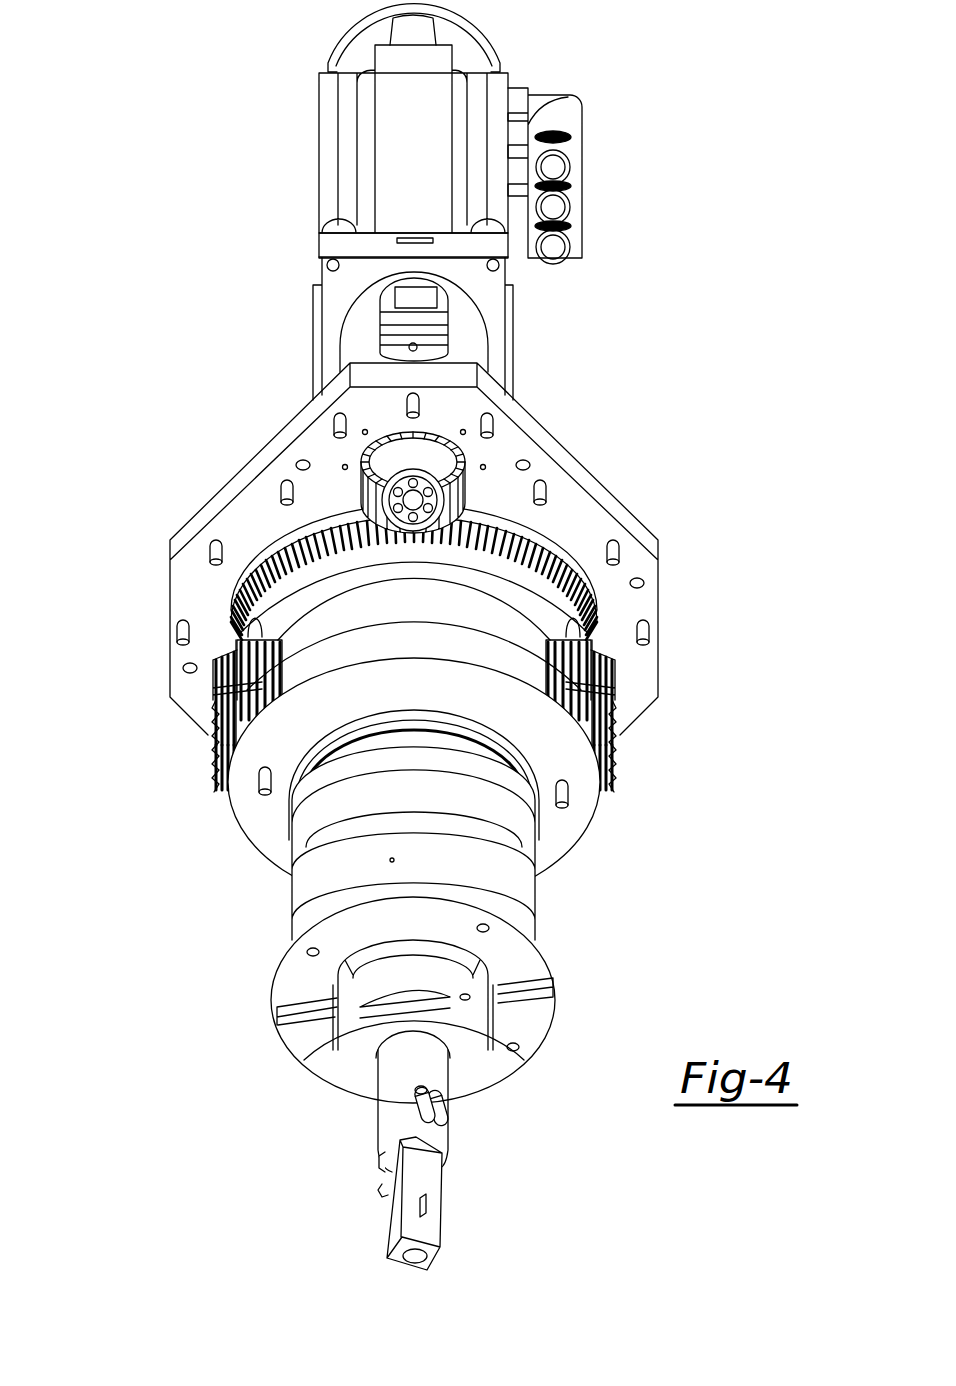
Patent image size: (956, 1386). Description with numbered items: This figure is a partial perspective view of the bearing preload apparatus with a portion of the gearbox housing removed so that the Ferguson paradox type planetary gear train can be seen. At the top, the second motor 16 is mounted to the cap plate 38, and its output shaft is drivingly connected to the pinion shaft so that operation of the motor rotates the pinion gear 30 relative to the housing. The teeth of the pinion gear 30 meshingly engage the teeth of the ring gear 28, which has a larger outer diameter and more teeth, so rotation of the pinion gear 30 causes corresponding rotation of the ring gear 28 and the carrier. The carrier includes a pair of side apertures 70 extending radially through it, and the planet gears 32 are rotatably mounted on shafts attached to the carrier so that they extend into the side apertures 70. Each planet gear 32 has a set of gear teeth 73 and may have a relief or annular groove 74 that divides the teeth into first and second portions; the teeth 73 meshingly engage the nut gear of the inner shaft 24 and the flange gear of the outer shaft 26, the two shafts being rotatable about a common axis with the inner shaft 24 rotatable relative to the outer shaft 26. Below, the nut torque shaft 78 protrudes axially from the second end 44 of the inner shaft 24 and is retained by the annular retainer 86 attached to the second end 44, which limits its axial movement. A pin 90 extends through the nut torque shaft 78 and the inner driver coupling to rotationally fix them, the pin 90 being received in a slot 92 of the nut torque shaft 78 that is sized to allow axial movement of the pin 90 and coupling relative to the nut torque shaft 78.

The second motor 16 is at (497, 42).
The pinion gear 30 is at (367, 467).
The ring gear 28 is at (293, 550).
The cap plate 38 is at (186, 594).
The side apertures 70 is at (235, 632).
The relief (annular groove) 74 is at (213, 677).
The gear teeth 73 is at (213, 719).
The planet gears 32 is at (212, 758).
The outer shaft 26 is at (300, 850).
The second end 44 is at (377, 957).
The inner shaft 24 is at (455, 957).
The annular retainer 86 is at (465, 1058).
The slot 92 is at (420, 1090).
The pin 90 is at (433, 1115).
The nut torque shaft 78 is at (390, 1130).